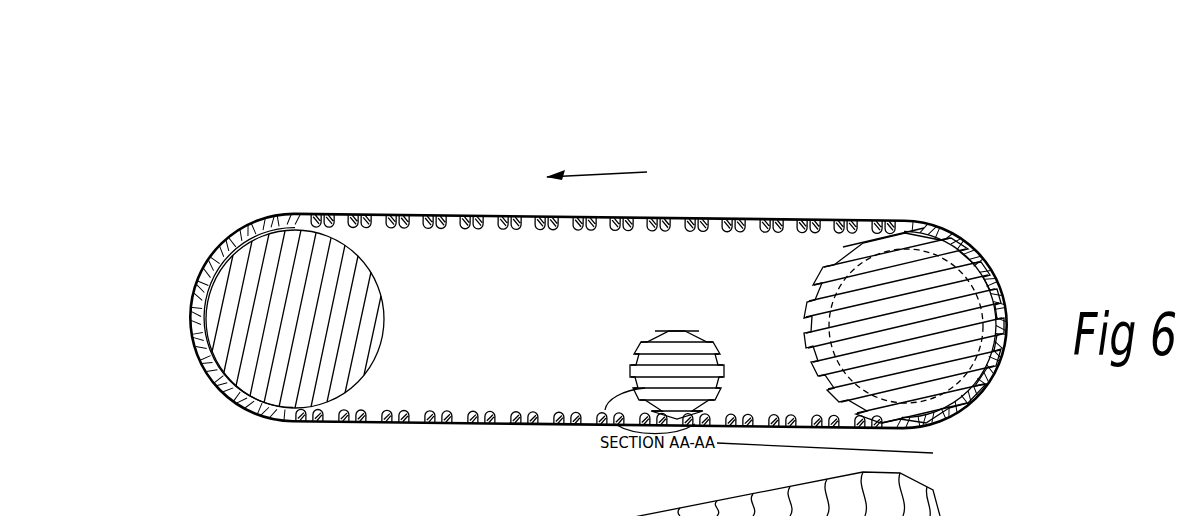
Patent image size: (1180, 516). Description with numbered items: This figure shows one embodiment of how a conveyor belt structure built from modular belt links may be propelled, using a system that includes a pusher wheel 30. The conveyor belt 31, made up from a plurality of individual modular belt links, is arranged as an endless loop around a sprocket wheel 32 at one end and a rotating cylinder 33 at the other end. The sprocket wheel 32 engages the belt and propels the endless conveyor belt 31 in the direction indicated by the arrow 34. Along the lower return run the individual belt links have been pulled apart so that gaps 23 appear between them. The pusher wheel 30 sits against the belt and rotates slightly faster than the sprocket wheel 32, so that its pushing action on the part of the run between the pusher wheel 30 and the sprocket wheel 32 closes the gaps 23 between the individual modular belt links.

The gaps 23 is at (480, 432).
The pusher wheel 30 is at (678, 370).
The conveyor belt 31 is at (443, 207).
The sprocket wheel 32 is at (918, 295).
The pulley 33 is at (250, 262).
The arrow 34 is at (592, 163).